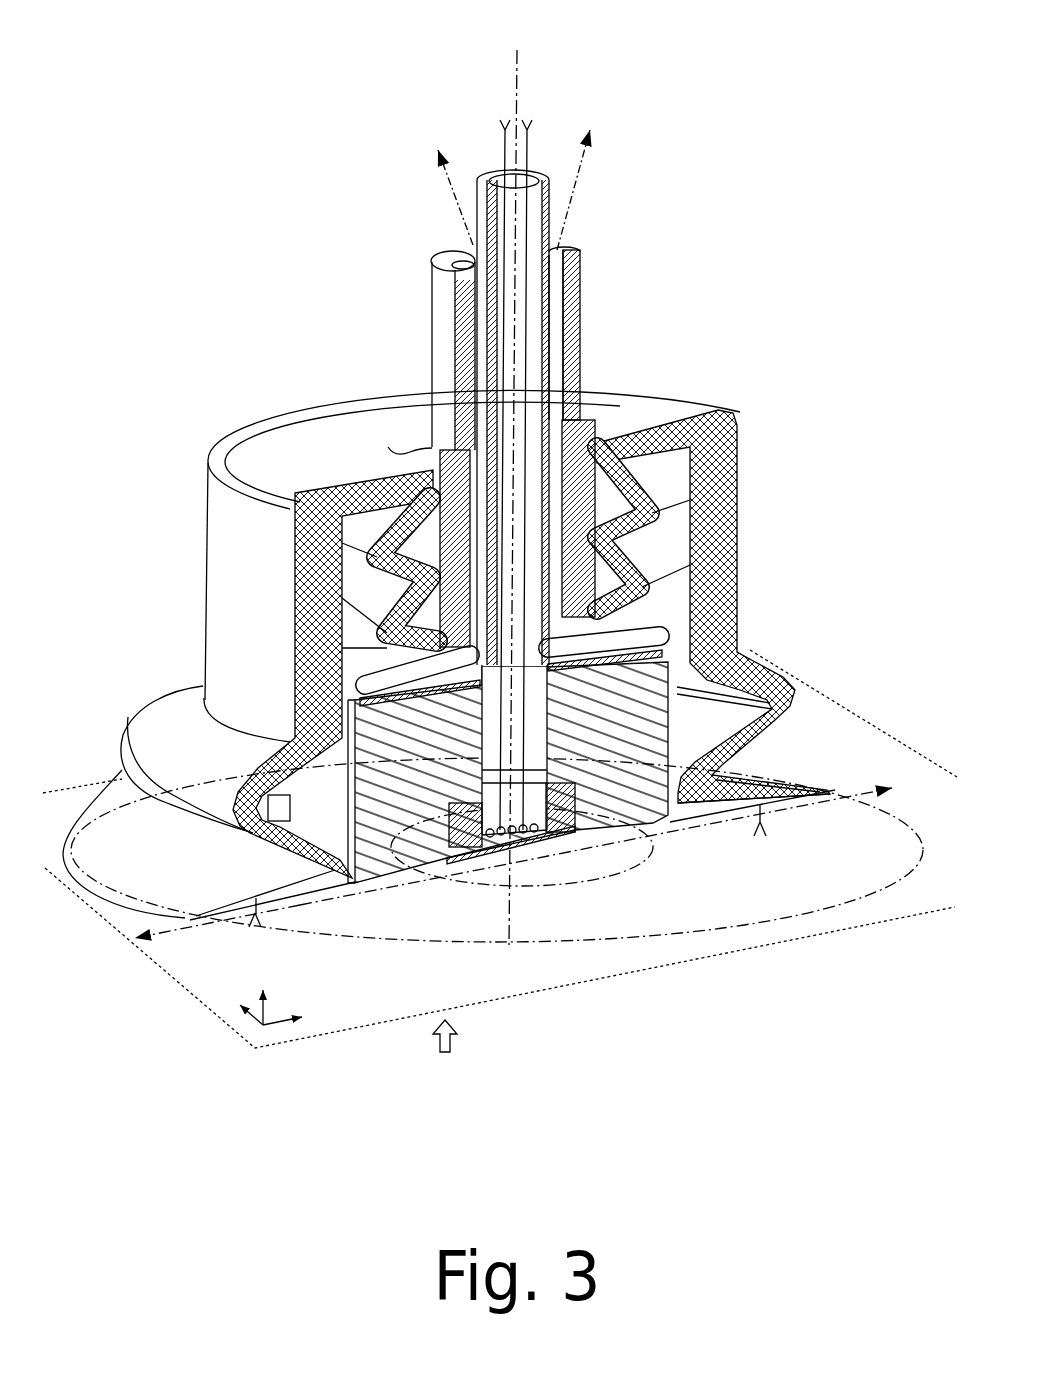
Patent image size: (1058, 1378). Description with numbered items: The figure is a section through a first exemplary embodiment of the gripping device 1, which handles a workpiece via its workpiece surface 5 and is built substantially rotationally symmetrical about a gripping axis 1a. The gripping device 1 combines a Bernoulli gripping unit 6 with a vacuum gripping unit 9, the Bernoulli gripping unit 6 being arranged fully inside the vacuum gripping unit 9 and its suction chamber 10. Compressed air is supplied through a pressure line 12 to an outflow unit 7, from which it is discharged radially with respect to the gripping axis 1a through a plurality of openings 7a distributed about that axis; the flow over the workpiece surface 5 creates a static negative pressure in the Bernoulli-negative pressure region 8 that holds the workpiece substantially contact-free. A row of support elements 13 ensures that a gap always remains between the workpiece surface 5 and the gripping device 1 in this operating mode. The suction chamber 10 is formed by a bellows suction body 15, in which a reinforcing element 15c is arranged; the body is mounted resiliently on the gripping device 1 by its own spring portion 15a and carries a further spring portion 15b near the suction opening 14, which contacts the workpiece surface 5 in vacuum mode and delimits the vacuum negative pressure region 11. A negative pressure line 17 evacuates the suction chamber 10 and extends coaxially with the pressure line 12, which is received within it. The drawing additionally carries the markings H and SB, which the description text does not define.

The gripping device 1 is at (705, 338).
The gripping axis 1a is at (517, 65).
The workpiece surface 5 is at (358, 997).
The Bernoulli gripping unit 6 is at (688, 1007).
The outflow unit 7 is at (535, 845).
The openings 7a is at (552, 852).
The Bernoulli-negative pressure region 8 is at (522, 872).
The vacuum gripping unit 9 is at (600, 1113).
The suction chamber 10 is at (317, 787).
The vacuum negative pressure region 11 is at (450, 920).
The pressure line 12 is at (530, 200).
The support elements 13 is at (380, 880).
The suction opening 14 is at (790, 814).
The bellows suction body 15 is at (724, 610).
The spring portion 15a is at (737, 430).
The spring portion 15b is at (797, 697).
The reinforcing element 15c is at (658, 510).
The negative pressure line 17 is at (468, 266).
The height direction H is at (443, 1054).
The base plane SB is at (170, 935).